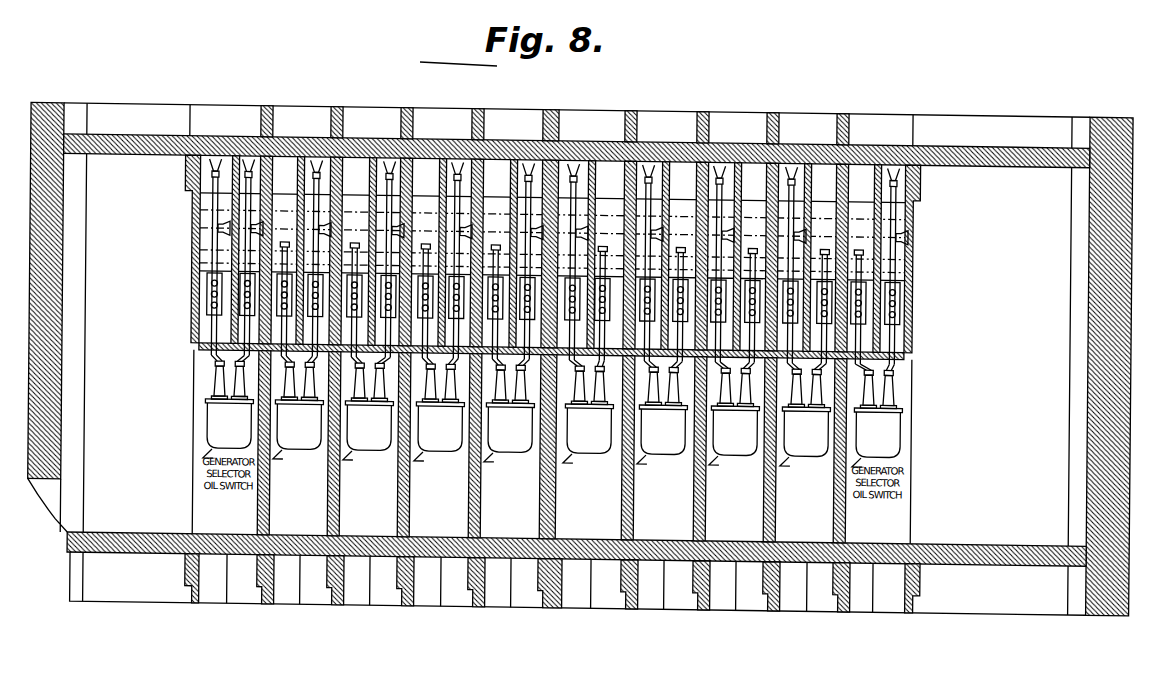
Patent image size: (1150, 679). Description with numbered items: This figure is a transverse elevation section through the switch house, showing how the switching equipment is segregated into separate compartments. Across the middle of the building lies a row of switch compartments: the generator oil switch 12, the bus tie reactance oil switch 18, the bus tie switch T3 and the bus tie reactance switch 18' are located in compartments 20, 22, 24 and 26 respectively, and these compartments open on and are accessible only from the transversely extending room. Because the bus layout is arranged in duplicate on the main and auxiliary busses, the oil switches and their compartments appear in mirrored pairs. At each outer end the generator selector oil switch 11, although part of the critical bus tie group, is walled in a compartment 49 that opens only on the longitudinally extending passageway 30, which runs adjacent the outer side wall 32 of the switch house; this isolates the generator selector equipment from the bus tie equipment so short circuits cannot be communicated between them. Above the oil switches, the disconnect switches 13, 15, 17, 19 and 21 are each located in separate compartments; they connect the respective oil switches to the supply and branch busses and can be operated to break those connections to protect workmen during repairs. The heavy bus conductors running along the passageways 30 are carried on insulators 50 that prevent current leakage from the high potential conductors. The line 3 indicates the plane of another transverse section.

The section line 3— 3 is at (405, 90).
The generator selector oil switch 11 is at (553, 414).
The generator oil switch 12 is at (552, 414).
The disconnect switch 13 is at (219, 300).
The disconnect switch 15 is at (290, 300).
The disconnect switch 17 is at (358, 299).
The bus tie reactance oil switch 18 is at (551, 414).
The bus tie reactance switch 18' is at (549, 414).
The disconnect switch 19 is at (431, 298).
The compartment 20 is at (552, 447).
The disconnect switch 21 is at (501, 297).
The compartment 22 is at (552, 447).
The compartment 24 is at (552, 447).
The compartment 26 is at (551, 447).
The longitudinally extending passageway 30 is at (577, 384).
The outer side wall 32 is at (1104, 368).
The compartment 49 is at (197, 495).
The insulator 50 is at (218, 159).
The bus tie switch T3 is at (551, 414).